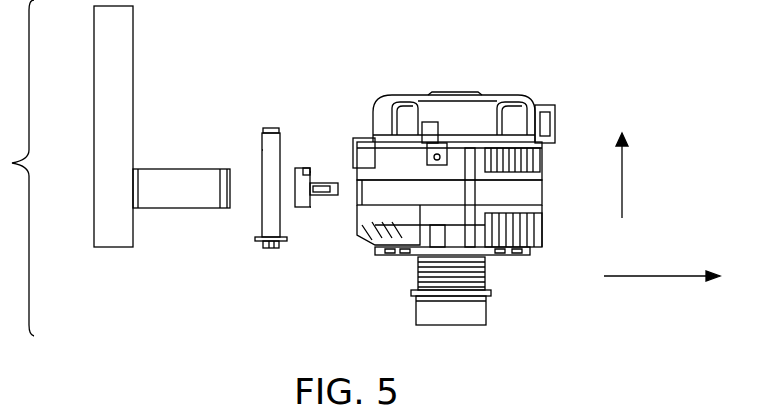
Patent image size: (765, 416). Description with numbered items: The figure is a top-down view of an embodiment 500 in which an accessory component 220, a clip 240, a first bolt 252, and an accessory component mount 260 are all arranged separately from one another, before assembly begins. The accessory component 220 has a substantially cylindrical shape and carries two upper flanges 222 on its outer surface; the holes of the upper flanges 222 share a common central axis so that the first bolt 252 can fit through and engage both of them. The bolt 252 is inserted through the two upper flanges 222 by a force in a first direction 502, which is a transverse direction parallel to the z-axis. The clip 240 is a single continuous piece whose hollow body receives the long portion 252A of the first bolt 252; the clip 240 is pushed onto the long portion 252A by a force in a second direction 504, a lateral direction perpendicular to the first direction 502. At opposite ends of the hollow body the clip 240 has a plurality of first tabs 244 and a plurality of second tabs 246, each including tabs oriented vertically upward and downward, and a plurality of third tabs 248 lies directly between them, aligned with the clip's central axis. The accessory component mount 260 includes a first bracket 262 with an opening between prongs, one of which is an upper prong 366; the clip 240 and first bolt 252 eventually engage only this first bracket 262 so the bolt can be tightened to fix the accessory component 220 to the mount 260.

The embodiment 500 is at (585, 33).
The accessory component mount 260 is at (133, 40).
The first bracket 262 is at (158, 209).
The upper prong 366 is at (229, 209).
The first bolt 252 is at (268, 249).
The long portion 252A is at (262, 150).
The clip 240 is at (323, 177).
The first tabs 244 is at (312, 172).
The second tabs 246 is at (310, 208).
The third tabs 248 is at (338, 196).
The accessory component 220 is at (500, 97).
The upper flanges 222 is at (355, 233).
The first direction 502 is at (622, 181).
The second direction 504 is at (668, 276).